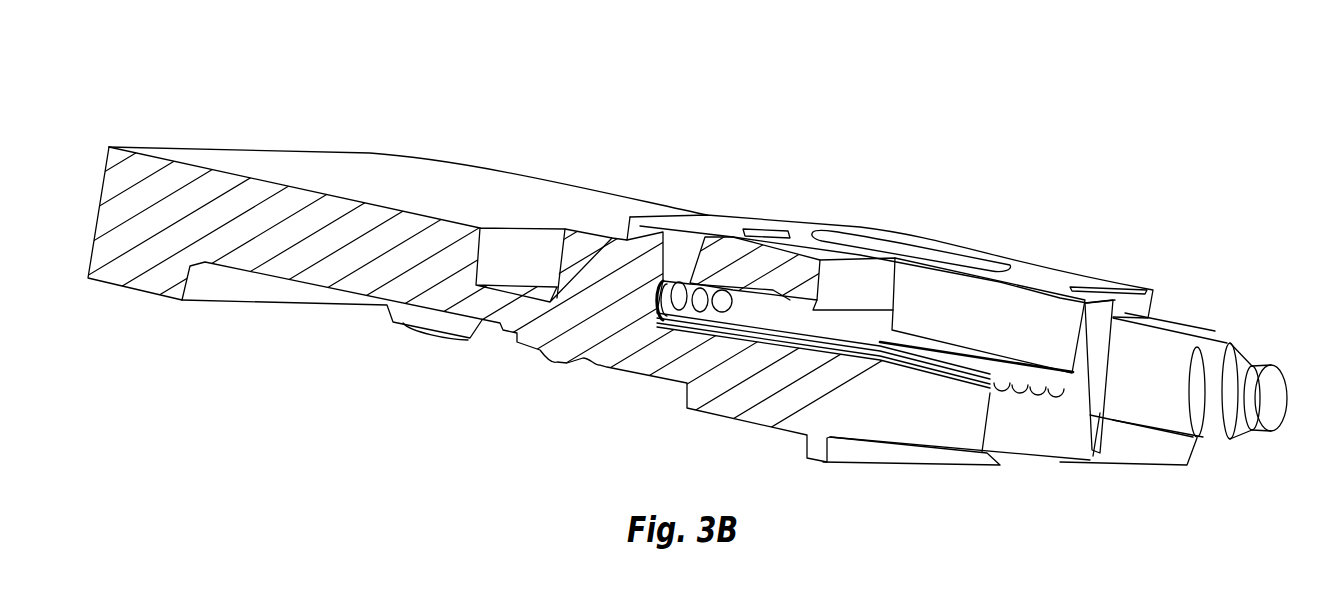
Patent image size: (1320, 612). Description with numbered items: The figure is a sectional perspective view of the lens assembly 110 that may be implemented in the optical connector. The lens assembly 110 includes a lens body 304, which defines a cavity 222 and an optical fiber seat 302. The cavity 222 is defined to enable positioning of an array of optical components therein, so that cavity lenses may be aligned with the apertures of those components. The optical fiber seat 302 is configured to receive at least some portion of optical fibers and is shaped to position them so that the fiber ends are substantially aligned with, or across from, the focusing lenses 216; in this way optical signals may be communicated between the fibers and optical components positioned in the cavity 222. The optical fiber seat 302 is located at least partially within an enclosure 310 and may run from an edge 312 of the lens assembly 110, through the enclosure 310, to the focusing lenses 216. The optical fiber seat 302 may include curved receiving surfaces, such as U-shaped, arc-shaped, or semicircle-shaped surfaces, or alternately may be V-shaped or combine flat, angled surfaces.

The lens assembly 110 is at (273, 92).
The lens body 304 is at (357, 257).
The cavity 222 is at (307, 325).
The focusing lenses 216 is at (663, 283).
The enclosure 310 is at (782, 304).
The optical fiber seat 302 is at (1067, 380).
The edge 312 is at (1013, 425).